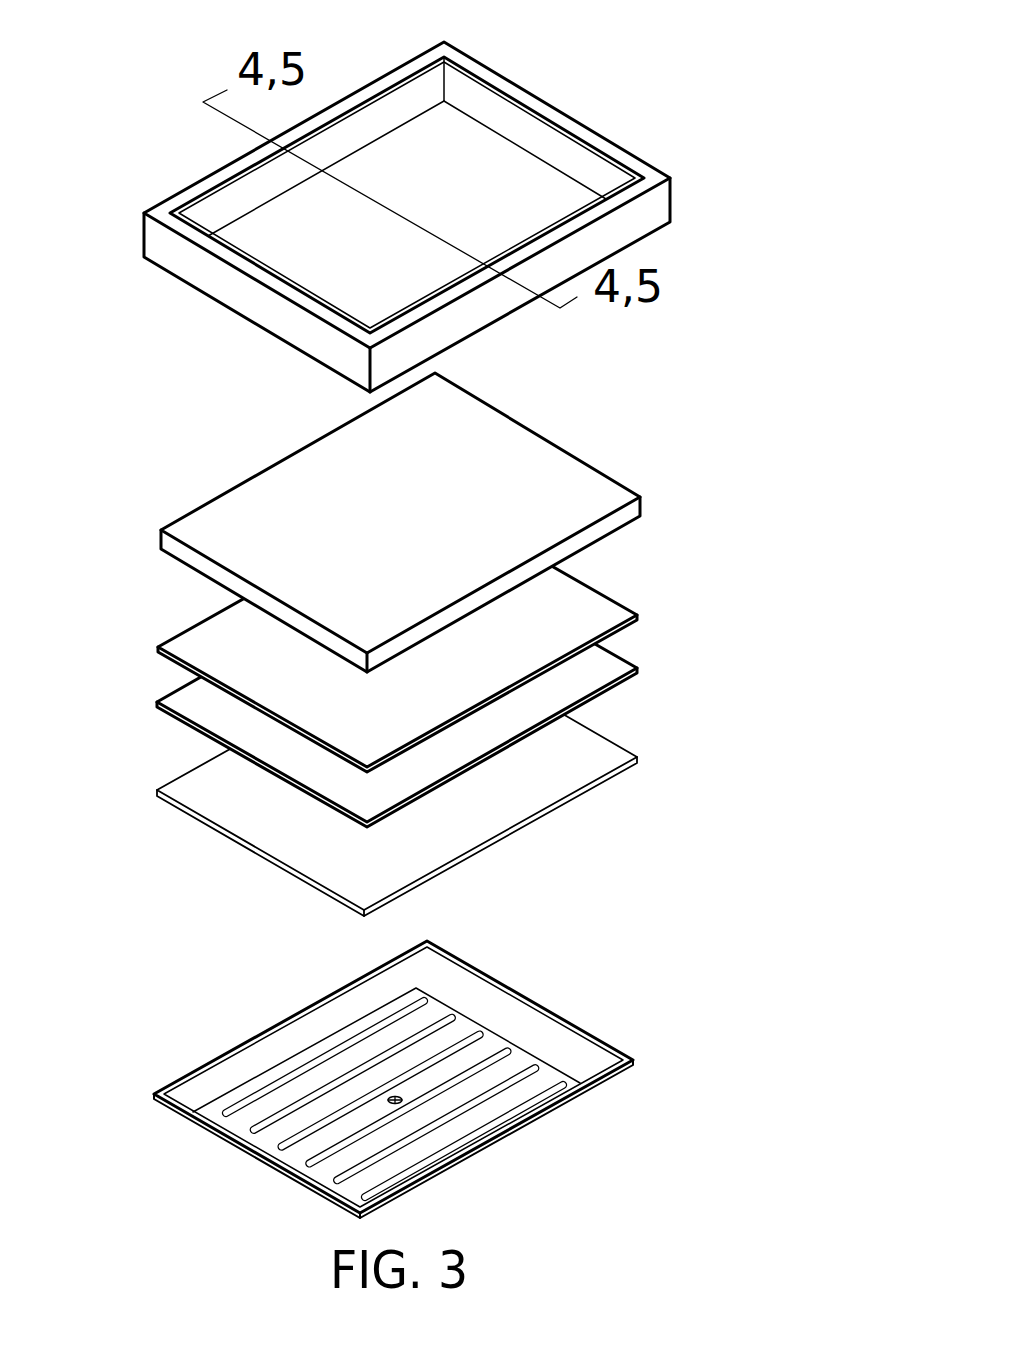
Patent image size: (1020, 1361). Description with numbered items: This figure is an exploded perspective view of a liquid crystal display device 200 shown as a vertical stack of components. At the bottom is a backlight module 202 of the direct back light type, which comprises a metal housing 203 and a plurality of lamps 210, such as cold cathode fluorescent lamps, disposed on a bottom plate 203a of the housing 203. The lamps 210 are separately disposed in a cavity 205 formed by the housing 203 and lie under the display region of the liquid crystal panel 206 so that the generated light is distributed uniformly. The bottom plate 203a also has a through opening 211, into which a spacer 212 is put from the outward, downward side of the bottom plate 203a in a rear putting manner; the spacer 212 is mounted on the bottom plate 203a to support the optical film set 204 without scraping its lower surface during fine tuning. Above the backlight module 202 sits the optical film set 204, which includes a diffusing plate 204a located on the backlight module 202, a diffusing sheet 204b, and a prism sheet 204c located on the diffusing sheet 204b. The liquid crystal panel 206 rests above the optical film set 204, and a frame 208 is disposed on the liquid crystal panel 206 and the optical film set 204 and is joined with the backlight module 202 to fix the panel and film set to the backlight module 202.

The liquid crystal display device 200 is at (120, 68).
The backlight module 202 is at (382, 1079).
The housing 203 is at (383, 1072).
The bottom plate 203a is at (515, 1171).
The optical film set 204 is at (490, 705).
The diffusing plate 204a is at (449, 776).
The diffusing sheet 204b is at (449, 687).
The prism sheet 204c is at (449, 633).
The cavity 205 is at (271, 956).
The liquid crystal panel 206 is at (166, 541).
The frame 208 is at (148, 243).
The lamps 210 is at (430, 1048).
The through opening 211 is at (498, 986).
The spacer 212 is at (458, 1023).